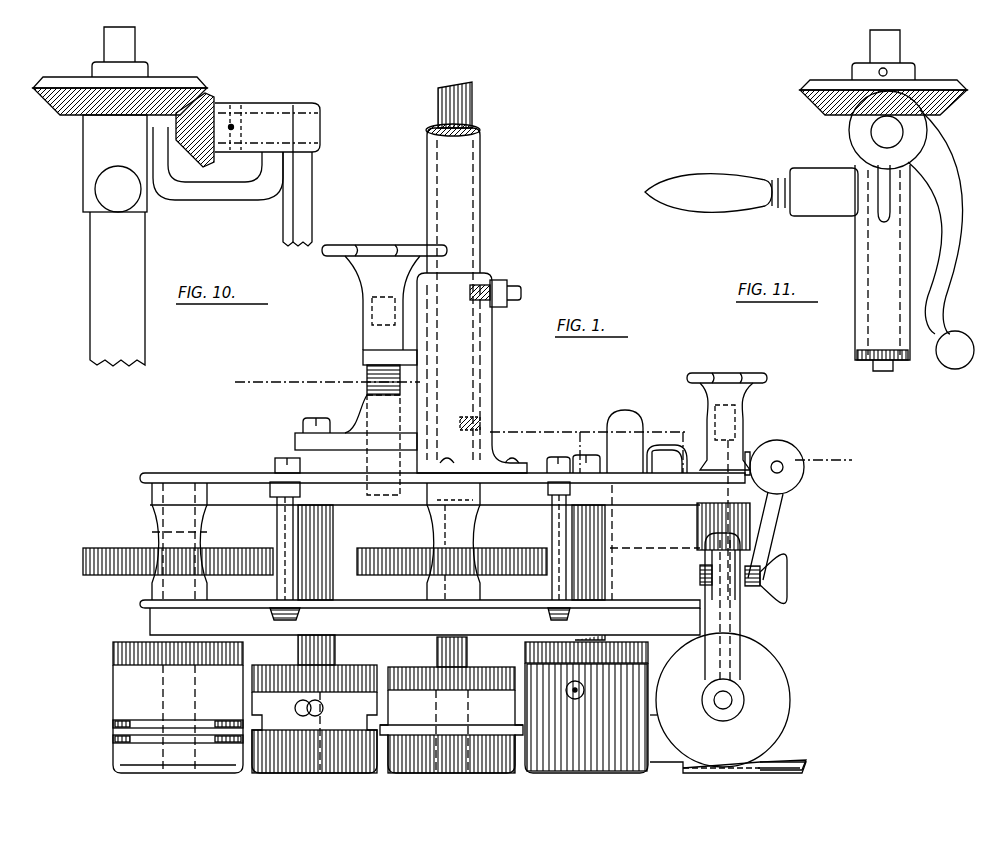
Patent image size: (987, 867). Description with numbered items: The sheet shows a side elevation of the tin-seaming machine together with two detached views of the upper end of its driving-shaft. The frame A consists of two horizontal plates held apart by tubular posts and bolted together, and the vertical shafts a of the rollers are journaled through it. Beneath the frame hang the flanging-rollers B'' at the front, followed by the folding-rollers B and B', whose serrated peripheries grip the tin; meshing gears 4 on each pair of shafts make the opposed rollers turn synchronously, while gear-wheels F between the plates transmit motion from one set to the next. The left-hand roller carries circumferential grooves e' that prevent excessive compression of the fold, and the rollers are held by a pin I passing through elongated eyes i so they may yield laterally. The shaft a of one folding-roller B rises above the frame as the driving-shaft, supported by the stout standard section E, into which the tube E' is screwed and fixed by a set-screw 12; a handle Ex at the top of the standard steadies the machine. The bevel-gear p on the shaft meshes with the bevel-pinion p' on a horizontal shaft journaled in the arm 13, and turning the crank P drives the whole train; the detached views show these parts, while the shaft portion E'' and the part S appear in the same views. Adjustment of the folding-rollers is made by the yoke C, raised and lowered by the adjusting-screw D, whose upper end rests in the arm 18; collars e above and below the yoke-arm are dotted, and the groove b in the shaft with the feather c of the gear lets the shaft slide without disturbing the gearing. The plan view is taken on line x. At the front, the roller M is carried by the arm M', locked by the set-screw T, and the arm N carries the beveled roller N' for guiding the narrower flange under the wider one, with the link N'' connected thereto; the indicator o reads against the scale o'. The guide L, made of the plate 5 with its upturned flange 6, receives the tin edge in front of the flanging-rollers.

In FIG. 10, the shaft a is at (133, 45).
In FIG. 11, the shaft a is at (905, 30).
In FIG. 1, the shaft a is at (500, 102).
In FIG. 10, the bevel-gear p is at (120, 88).
In FIG. 11, the bevel-gear p is at (889, 90).
In FIG. 10, the bevel-pinion p' is at (201, 121).
In FIG. 11, the bevel-pinion p' is at (876, 130).
In FIG. 10, the arm 13 is at (218, 170).
In FIG. 10, the crank P is at (300, 196).
In FIG. 11, the crank P is at (941, 239).
In FIG. 10, the tube E' is at (115, 240).
In FIG. 1, the tube E' is at (453, 294).
In FIG. 11, the shaft section E'' is at (882, 262).
In FIG. 11, the handle Ex is at (767, 193).
In FIG. 1, the standard section E is at (472, 386).
In FIG. 1, the set-screw 12 is at (521, 292).
In FIG. 1, the adjusting-screw D is at (365, 290).
In FIG. 1, the arm 18 is at (378, 355).
In FIG. 1, the yoke C is at (355, 428).
In FIG. 1, the collars e is at (479, 439).
In FIG. 1, the section line x is at (544, 422).
In FIG. 1, the frame A is at (442, 545).
In FIG. 1, the gear-wheels F is at (315, 541).
In FIG. 1, the longitudinal groove b is at (451, 525).
In FIG. 1, the spline or feather c is at (450, 587).
In FIG. 1, the graduated scale o' is at (625, 505).
In FIG. 1, the indicator or pointer o is at (667, 449).
In FIG. 1, the shifting lever S is at (727, 486).
In FIG. 1, the set-screw T is at (750, 455).
In FIG. 1, the vertical roller N' is at (777, 457).
In FIG. 1, the connecting link N'' is at (776, 536).
In FIG. 1, the arm N is at (758, 553).
In FIG. 1, the arm M' is at (722, 606).
In FIG. 1, the roller M is at (720, 700).
In FIG. 1, the horizontal plate 5 is at (755, 777).
In FIG. 1, the guide L is at (792, 757).
In FIG. 1, the side flange 6 is at (779, 761).
In FIG. 1, the flanging-rollers B'' is at (380, 704).
In FIG. 1, the circumferential grooves e' is at (169, 731).
In FIG. 1, the folding-roller B' is at (314, 704).
In FIG. 1, the folding-roller B is at (451, 705).
In FIG. 1, the gears 4 is at (113, 654).
In FIG. 1, the elongated eyes i is at (437, 700).
In FIG. 1, the pin I is at (332, 700).